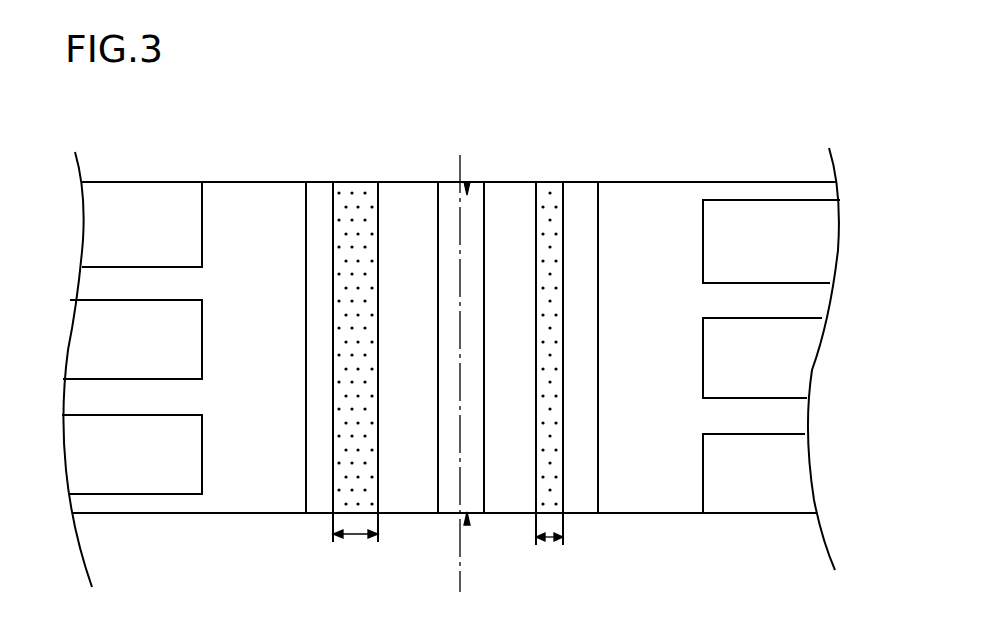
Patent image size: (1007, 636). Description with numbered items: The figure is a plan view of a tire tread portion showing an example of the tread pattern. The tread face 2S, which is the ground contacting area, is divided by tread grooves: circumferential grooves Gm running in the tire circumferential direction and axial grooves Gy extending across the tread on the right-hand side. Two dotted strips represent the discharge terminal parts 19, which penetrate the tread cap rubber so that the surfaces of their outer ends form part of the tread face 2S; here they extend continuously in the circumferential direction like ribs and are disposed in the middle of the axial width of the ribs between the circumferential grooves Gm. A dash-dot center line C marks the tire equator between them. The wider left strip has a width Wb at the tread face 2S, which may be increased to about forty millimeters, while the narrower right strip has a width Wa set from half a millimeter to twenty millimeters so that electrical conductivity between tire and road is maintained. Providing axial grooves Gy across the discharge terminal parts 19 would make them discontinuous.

The discharge terminal parts 19 is at (360, 198).
The circumferential grooves Gm is at (479, 183).
The axial grooves Gy is at (810, 303).
The tread face 2S is at (405, 490).
The center line C is at (460, 577).
The width of terminal part 19B at the ground contacting area Wb is at (358, 538).
The width of terminal part 19A at the ground contacting area Wa is at (547, 540).